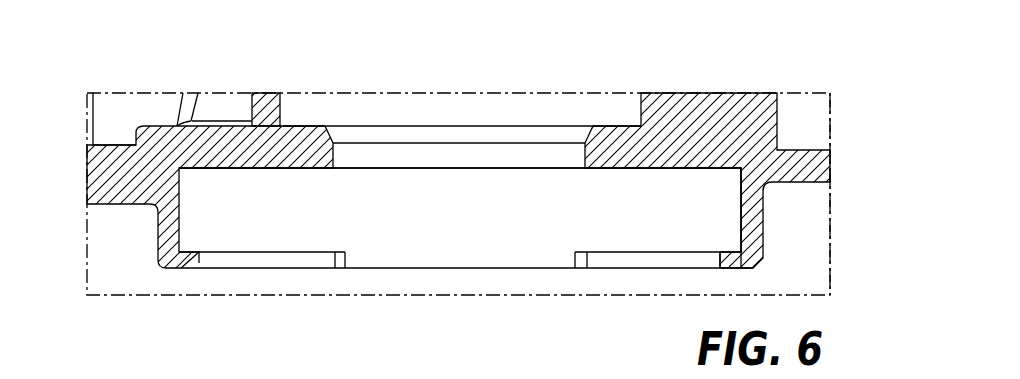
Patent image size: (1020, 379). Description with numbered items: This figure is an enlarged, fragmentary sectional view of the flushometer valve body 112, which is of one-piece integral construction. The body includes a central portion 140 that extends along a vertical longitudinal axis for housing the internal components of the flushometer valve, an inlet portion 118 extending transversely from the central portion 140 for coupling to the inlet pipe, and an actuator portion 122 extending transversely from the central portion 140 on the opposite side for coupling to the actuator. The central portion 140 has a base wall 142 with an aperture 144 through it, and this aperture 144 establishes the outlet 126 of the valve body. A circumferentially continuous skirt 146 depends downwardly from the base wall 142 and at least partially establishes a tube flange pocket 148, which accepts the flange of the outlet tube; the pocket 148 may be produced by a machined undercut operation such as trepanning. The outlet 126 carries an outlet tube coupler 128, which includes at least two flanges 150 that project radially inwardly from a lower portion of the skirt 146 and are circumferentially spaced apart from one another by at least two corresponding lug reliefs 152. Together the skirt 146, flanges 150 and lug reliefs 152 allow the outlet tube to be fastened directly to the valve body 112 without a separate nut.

The flushometer valve body 112 is at (768, 72).
The flushometer valve body inlet 118 is at (83, 153).
The actuator portion 122 is at (835, 215).
The outlet 126 is at (438, 168).
The outlet tube coupler 128 is at (156, 238).
The central portion 140 is at (672, 135).
The base wall 142 is at (646, 172).
The aperture 144 is at (583, 155).
The skirt 146 is at (750, 228).
The tube flange pocket 148 is at (287, 219).
The flanges 150 is at (575, 260).
The lug reliefs 152 is at (200, 259).